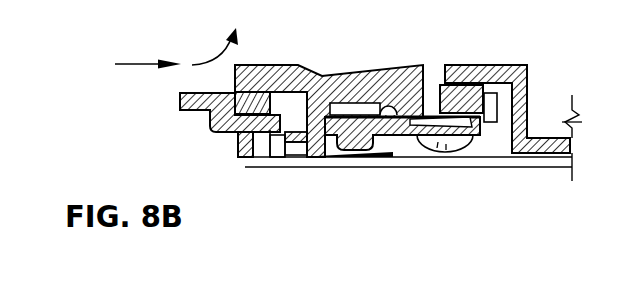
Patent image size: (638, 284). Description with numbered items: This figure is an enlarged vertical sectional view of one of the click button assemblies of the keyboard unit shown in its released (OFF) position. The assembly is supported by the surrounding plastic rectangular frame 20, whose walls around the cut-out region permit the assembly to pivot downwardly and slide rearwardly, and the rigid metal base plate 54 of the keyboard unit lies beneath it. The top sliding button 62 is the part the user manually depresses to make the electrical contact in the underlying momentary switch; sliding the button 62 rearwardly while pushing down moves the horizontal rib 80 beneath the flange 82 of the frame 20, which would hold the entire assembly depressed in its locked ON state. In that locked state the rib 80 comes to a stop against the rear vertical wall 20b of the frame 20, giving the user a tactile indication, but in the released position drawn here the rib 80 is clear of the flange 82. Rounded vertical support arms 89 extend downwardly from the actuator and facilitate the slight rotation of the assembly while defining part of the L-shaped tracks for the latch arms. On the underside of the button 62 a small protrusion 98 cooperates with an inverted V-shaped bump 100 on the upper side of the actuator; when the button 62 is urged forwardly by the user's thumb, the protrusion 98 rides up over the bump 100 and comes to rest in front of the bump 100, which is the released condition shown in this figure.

The frame 20 is at (177, 103).
The rear vertical wall 20b is at (238, 141).
The button 62 is at (278, 63).
The inverted V-shaped bump 100 is at (440, 85).
The rigid metal base plate 54 is at (357, 168).
The horizontal rib 80 is at (301, 163).
The flange 82 is at (266, 165).
The rounded vertical support arms 89 is at (436, 148).
The protrusion 98 is at (470, 134).